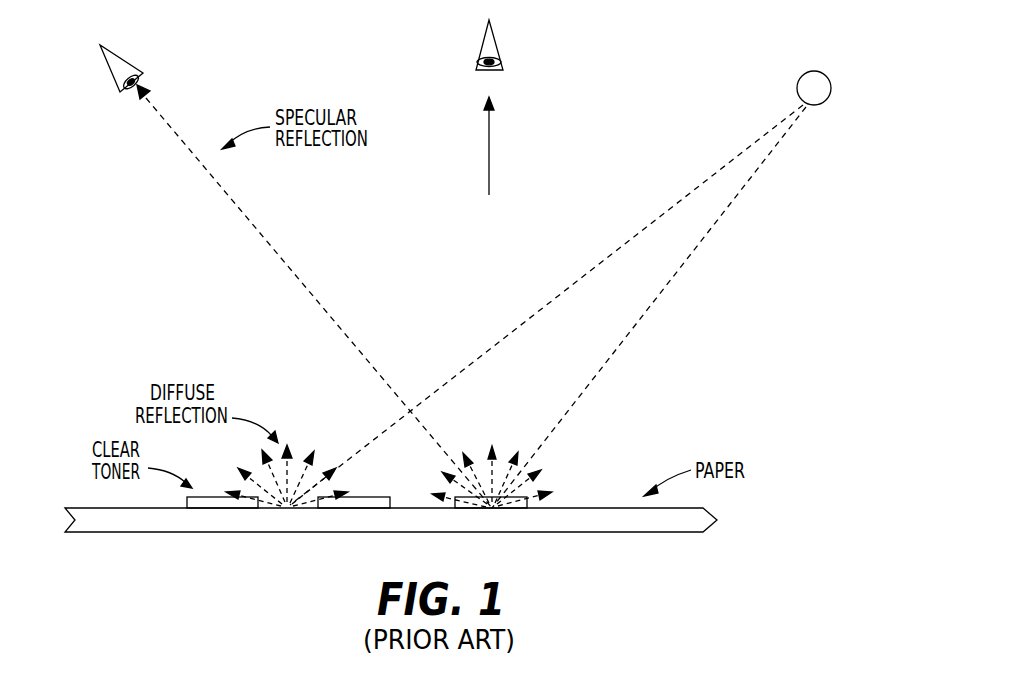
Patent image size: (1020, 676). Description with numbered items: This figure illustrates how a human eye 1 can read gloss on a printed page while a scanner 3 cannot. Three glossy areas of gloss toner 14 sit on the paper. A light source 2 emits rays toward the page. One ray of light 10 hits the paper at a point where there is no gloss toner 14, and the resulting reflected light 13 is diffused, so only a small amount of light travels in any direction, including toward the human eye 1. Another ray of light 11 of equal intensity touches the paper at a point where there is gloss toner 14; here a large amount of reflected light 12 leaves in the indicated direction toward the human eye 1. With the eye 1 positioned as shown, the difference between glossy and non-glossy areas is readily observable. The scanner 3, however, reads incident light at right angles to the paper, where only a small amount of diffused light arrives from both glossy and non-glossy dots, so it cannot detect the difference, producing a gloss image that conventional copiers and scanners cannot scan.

The human eye 1 is at (125, 63).
The light source 2 is at (801, 77).
The scanner 3 is at (497, 45).
The ray of light 10 is at (641, 230).
The ray of light 11 is at (688, 258).
The reflected light 12 is at (268, 232).
The reflected light 13 is at (305, 432).
The gloss toner 14 is at (209, 503).